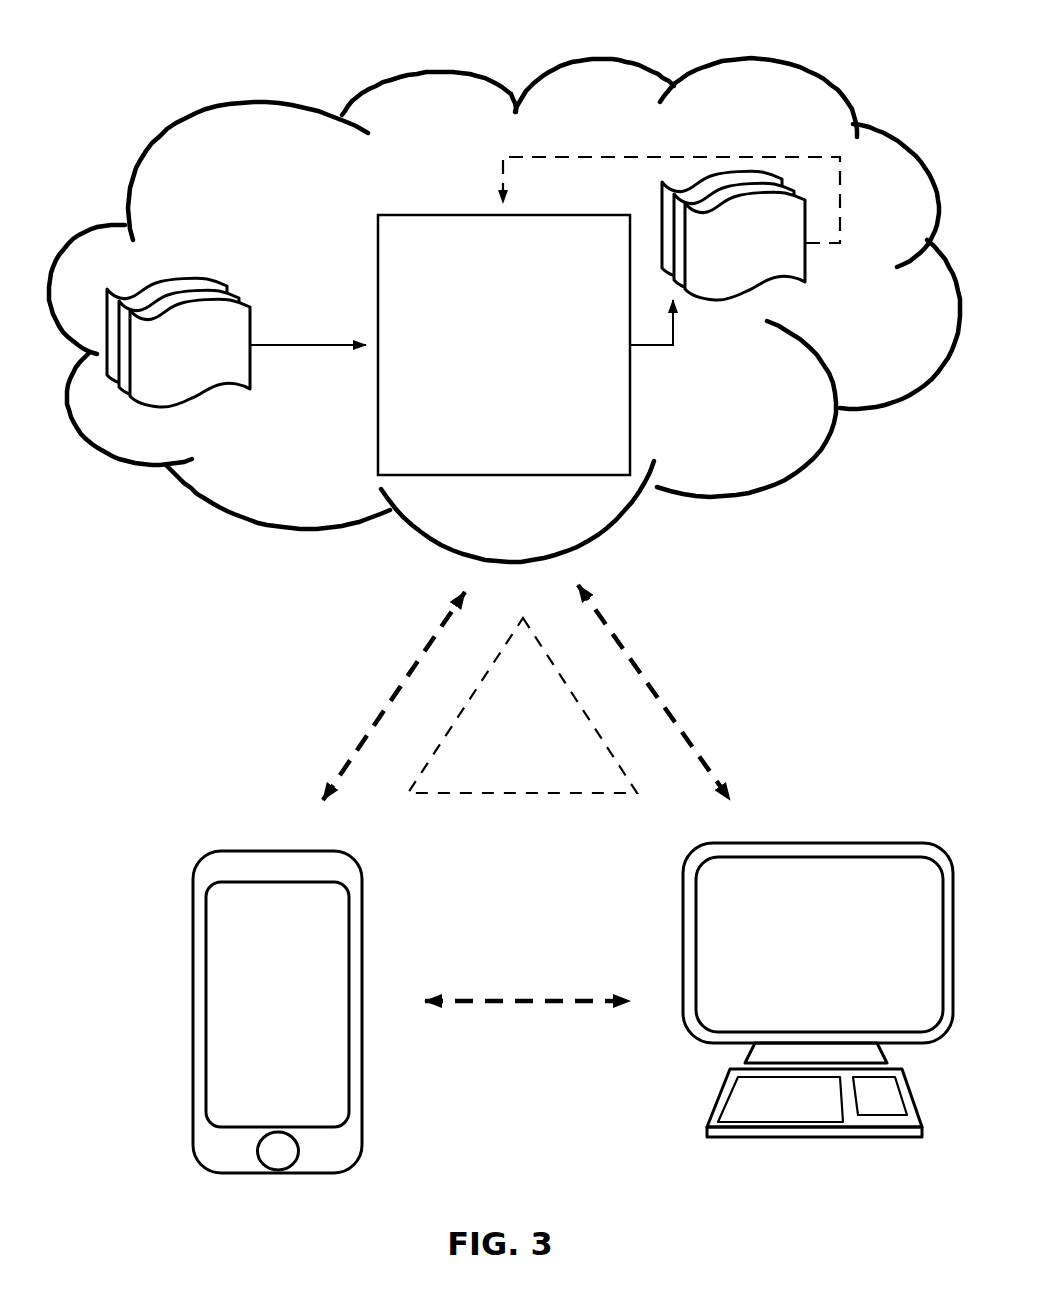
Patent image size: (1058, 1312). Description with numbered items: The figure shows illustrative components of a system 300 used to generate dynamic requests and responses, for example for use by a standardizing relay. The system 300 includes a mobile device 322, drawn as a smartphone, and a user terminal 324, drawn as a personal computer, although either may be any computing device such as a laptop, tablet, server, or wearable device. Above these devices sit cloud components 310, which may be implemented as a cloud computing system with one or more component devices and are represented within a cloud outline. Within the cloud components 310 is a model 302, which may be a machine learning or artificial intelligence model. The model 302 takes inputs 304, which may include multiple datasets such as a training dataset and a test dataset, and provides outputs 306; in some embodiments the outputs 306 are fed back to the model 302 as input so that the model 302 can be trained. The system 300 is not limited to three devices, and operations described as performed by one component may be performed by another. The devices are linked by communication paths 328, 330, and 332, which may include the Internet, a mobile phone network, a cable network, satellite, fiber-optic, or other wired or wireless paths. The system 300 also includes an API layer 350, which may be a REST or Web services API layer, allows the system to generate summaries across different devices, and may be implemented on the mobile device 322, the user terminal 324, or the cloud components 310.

The system 300 is at (481, 52).
The model 302 is at (484, 358).
The inputs 304 is at (197, 275).
The outputs 306 is at (783, 276).
The cloud components 310 is at (802, 114).
The mobile device 322 is at (267, 827).
The user terminal 324 is at (812, 834).
The communication path 328 is at (348, 680).
The communication path 330 is at (733, 650).
The communication path 332 is at (519, 970).
The API layer 350 is at (506, 729).